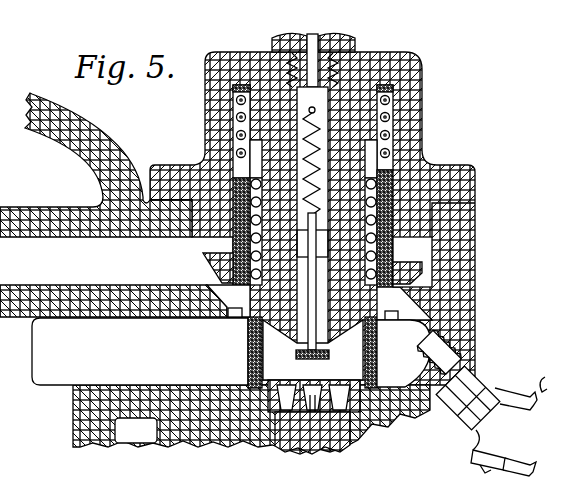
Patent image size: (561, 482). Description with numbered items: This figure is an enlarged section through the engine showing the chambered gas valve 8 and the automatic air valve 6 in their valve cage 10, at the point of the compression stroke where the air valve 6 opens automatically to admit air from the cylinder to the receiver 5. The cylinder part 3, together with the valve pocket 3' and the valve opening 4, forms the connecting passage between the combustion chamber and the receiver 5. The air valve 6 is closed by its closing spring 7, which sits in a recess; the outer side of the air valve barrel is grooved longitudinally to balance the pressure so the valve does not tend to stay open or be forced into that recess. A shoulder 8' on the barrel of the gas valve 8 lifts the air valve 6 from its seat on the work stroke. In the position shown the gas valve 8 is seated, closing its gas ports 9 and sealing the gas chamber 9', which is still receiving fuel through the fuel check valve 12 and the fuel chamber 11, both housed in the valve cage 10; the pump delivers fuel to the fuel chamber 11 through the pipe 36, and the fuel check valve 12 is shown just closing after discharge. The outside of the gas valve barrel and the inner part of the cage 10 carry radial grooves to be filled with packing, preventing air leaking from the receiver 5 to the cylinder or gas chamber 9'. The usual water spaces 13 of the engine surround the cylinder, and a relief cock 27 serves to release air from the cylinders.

The cylinder part 3 is at (140, 351).
The valve pocket 3' is at (404, 353).
The valve opening 4 is at (319, 302).
The receiver 5 is at (124, 277).
The automatic air valve 6 is at (422, 264).
The closing spring 7 is at (392, 107).
The chambered gas valve 8 is at (301, 264).
The shoulder 8' is at (232, 352).
The gas ports 9 is at (314, 429).
The gas chamber 9' is at (313, 350).
The valve cage 10 is at (412, 78).
The fuel chamber 11 is at (312, 216).
The fuel check valve 12 is at (312, 349).
The water spaces 13 is at (215, 273).
The relief cock 27 is at (481, 402).
The pipe 36 is at (312, 41).